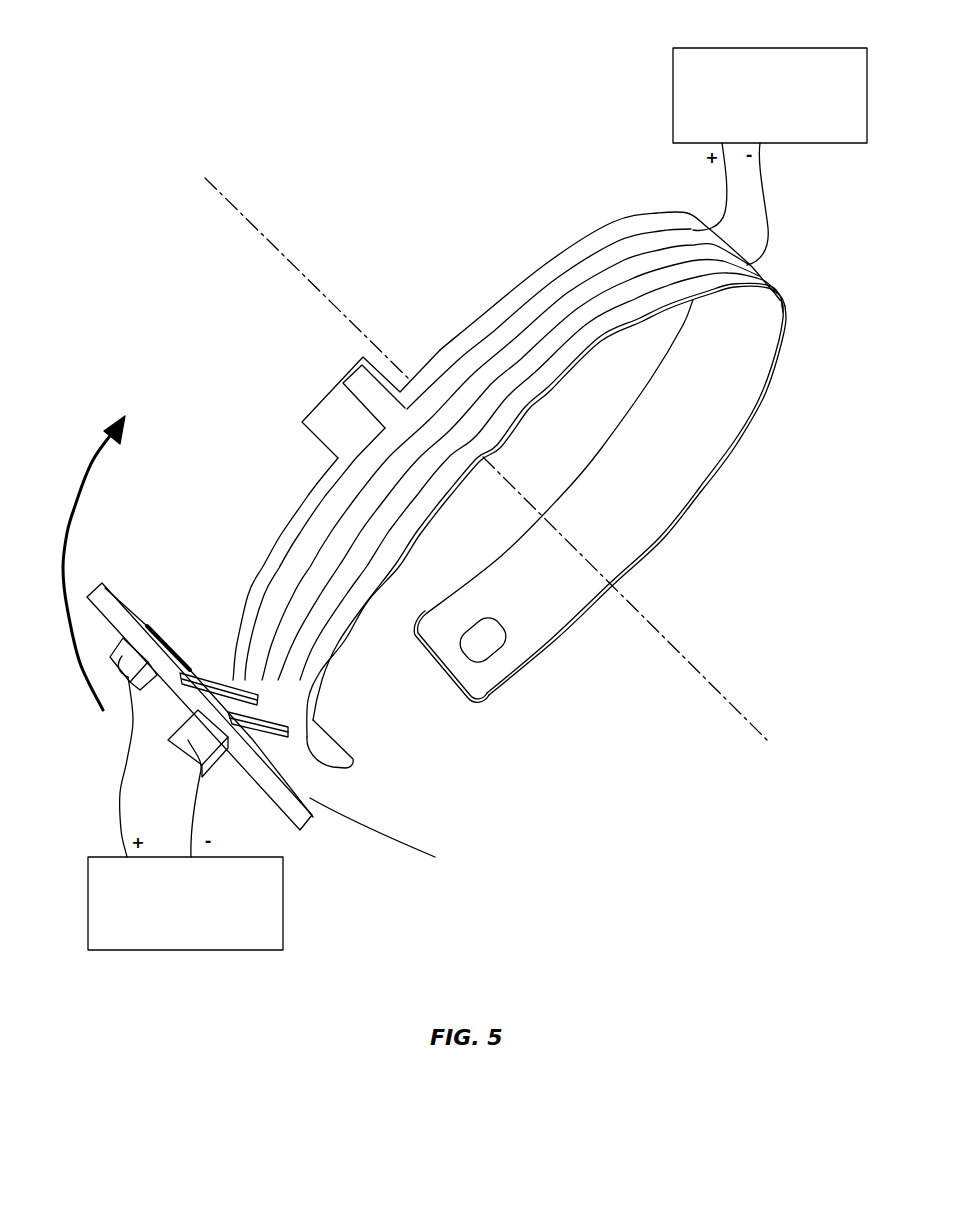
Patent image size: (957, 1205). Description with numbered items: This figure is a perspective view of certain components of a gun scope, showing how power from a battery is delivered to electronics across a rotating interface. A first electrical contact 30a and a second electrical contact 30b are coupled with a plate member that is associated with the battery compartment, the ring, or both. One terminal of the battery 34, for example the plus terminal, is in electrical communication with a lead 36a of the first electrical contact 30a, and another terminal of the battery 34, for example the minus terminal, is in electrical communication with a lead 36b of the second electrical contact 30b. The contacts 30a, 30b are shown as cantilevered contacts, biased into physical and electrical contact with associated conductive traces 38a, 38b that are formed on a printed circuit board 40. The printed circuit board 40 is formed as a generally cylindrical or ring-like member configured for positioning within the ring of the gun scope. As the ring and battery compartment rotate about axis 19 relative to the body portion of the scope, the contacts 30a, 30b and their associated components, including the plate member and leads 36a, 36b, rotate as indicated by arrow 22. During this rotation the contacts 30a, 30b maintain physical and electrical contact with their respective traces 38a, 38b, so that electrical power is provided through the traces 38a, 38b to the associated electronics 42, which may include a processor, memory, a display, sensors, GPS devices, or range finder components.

The axis 19 is at (250, 218).
The arrow 22 is at (72, 535).
The first electrical contact 30a is at (226, 688).
The second electrical contact 30b is at (292, 742).
The battery 34 is at (283, 928).
The lead of the first electrical contact 36a is at (120, 667).
The lead of the second electrical contact 36b is at (201, 764).
The conductive trace 38a is at (487, 357).
The conductive trace 38b is at (567, 344).
The printed circuit board 40 is at (270, 553).
The electronics 42 is at (673, 93).